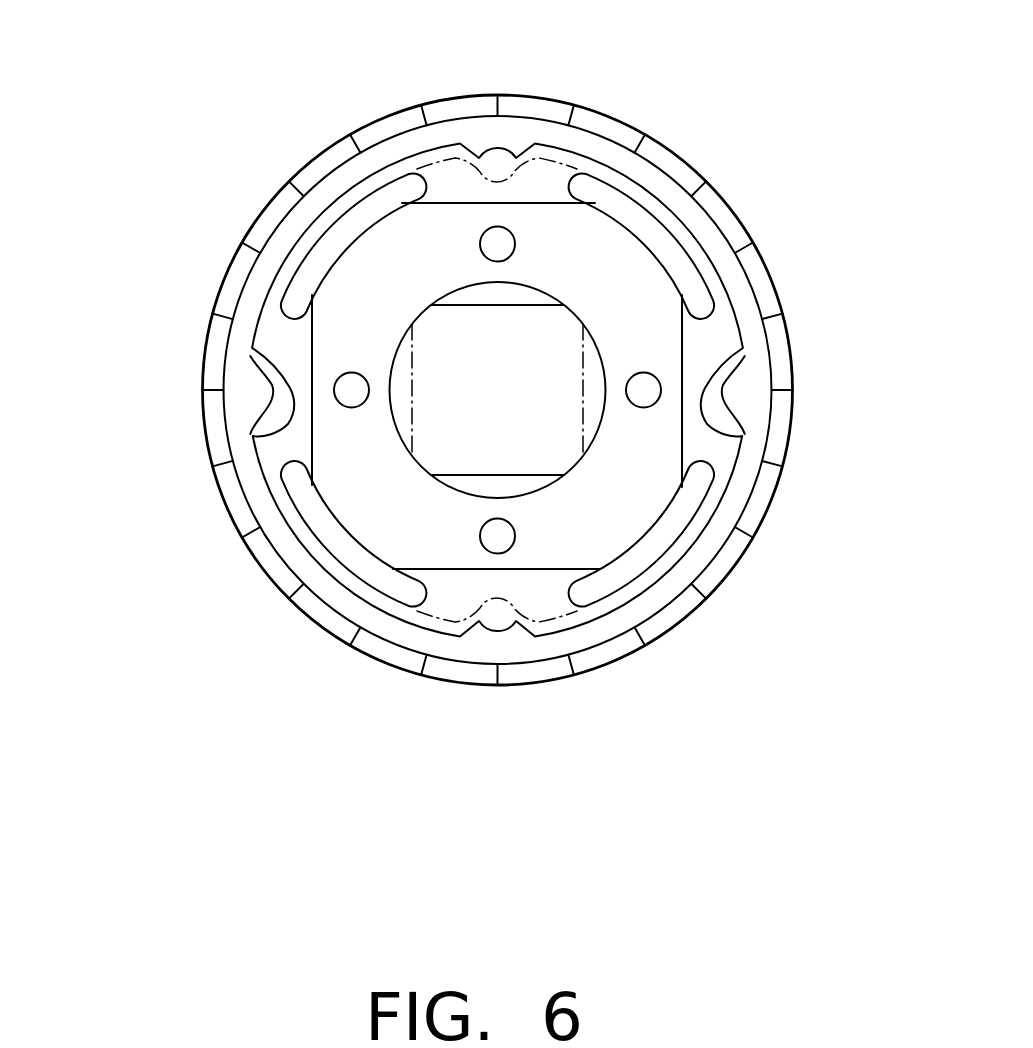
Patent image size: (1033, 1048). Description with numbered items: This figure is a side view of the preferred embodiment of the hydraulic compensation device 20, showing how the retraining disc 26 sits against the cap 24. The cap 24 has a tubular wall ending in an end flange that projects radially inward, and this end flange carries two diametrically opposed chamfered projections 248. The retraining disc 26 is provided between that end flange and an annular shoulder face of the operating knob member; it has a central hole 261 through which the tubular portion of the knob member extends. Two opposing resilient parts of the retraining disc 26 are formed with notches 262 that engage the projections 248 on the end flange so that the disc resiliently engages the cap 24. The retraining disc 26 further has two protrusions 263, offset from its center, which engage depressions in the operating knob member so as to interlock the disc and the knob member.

The hub assembly 20 is at (433, 91).
The cap 24 is at (735, 207).
The retraining disc 26 is at (703, 328).
The central hole 261 is at (528, 305).
The notches 262 is at (497, 167).
The protrusions 263 is at (648, 388).
The chamfered projections 248 is at (265, 392).